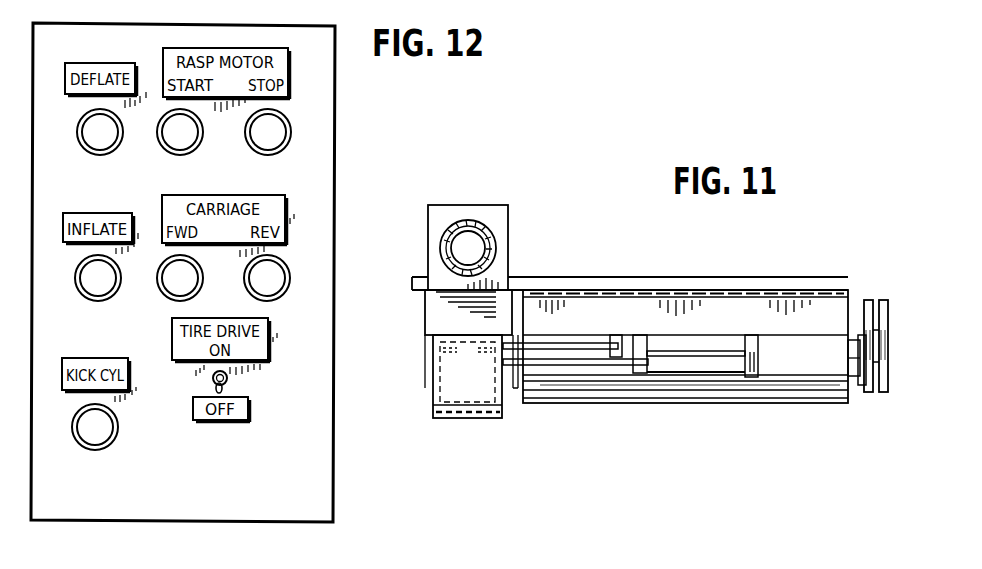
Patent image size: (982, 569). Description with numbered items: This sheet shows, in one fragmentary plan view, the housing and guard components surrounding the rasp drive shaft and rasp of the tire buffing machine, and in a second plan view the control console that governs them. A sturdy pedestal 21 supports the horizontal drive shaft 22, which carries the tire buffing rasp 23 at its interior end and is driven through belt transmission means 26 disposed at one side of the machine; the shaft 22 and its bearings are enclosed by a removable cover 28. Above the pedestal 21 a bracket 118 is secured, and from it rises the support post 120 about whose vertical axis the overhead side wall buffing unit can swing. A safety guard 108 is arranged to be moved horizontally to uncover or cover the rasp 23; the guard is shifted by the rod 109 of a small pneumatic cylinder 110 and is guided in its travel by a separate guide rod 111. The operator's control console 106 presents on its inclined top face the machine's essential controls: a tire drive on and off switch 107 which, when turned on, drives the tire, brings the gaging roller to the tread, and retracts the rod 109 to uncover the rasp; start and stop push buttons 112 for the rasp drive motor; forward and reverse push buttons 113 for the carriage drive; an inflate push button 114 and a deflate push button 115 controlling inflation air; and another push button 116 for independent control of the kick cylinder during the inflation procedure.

In FIG. 12, the operator's control console 106 is at (318, 183).
In FIG. 12, the tire drive on and off switch 107 is at (228, 384).
In FIG. 11, the safety guard 108 is at (435, 418).
In FIG. 11, the rod 109 is at (592, 366).
In FIG. 11, the small pneumatic cylinder 110 is at (725, 376).
In FIG. 11, the guide rod 111 is at (588, 343).
In FIG. 12, the start and stop push buttons 112 is at (260, 133).
In FIG. 12, the forward and reverse push buttons 113 is at (256, 275).
In FIG. 12, the inflate push button 114 is at (107, 277).
In FIG. 12, the deflate push button 115 is at (106, 140).
In FIG. 12, the push button 116 is at (103, 432).
In FIG. 11, the bracket 118 is at (503, 228).
In FIG. 11, the support post 120 is at (462, 229).
In FIG. 11, the pedestal 21 is at (637, 278).
In FIG. 11, the drive shaft 22 is at (852, 381).
In FIG. 11, the tire buffing rasp 23 is at (485, 418).
In FIG. 11, the belt transmission means 26 is at (881, 299).
In FIG. 11, the removable cover 28 is at (682, 404).